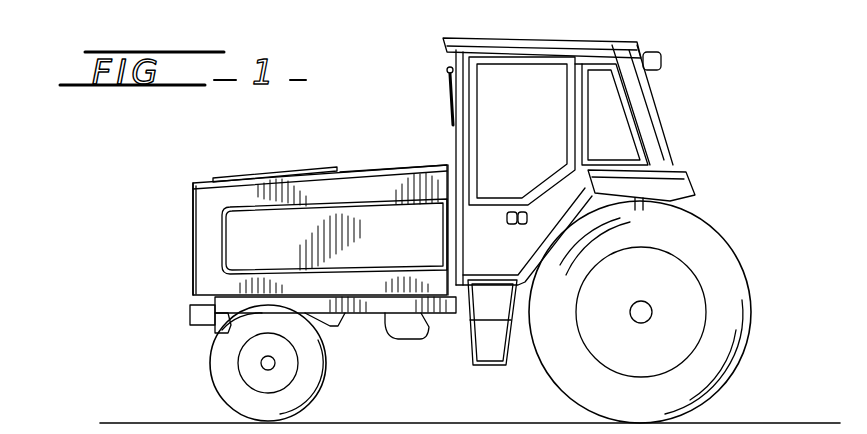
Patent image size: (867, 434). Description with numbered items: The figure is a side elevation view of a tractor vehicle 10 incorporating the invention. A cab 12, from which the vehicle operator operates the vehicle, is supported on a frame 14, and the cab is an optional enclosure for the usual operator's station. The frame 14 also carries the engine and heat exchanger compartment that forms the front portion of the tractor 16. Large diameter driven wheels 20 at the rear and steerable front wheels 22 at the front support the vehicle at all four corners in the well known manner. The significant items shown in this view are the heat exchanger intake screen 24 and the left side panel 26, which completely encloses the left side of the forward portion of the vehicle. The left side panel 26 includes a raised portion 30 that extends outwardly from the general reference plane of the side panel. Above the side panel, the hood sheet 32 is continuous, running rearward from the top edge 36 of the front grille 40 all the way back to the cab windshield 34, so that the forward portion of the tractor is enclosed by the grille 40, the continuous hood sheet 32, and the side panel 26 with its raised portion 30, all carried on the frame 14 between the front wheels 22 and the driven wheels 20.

The tractor vehicle 10 is at (563, 30).
The cab 12 is at (473, 38).
The frame 14 is at (437, 318).
The front portion of the tractor 16 is at (353, 162).
The driven wheels 20 is at (733, 248).
The steerable front wheels 22 is at (212, 378).
The heat exchanger intake screen 24 is at (296, 176).
The left side panel 26 is at (212, 228).
The raised portion 30 is at (242, 254).
The hood sheet 32 is at (408, 165).
The cab windshield 34 is at (455, 142).
The top edge of the front grille 36 is at (193, 183).
The front grille 40 is at (190, 200).